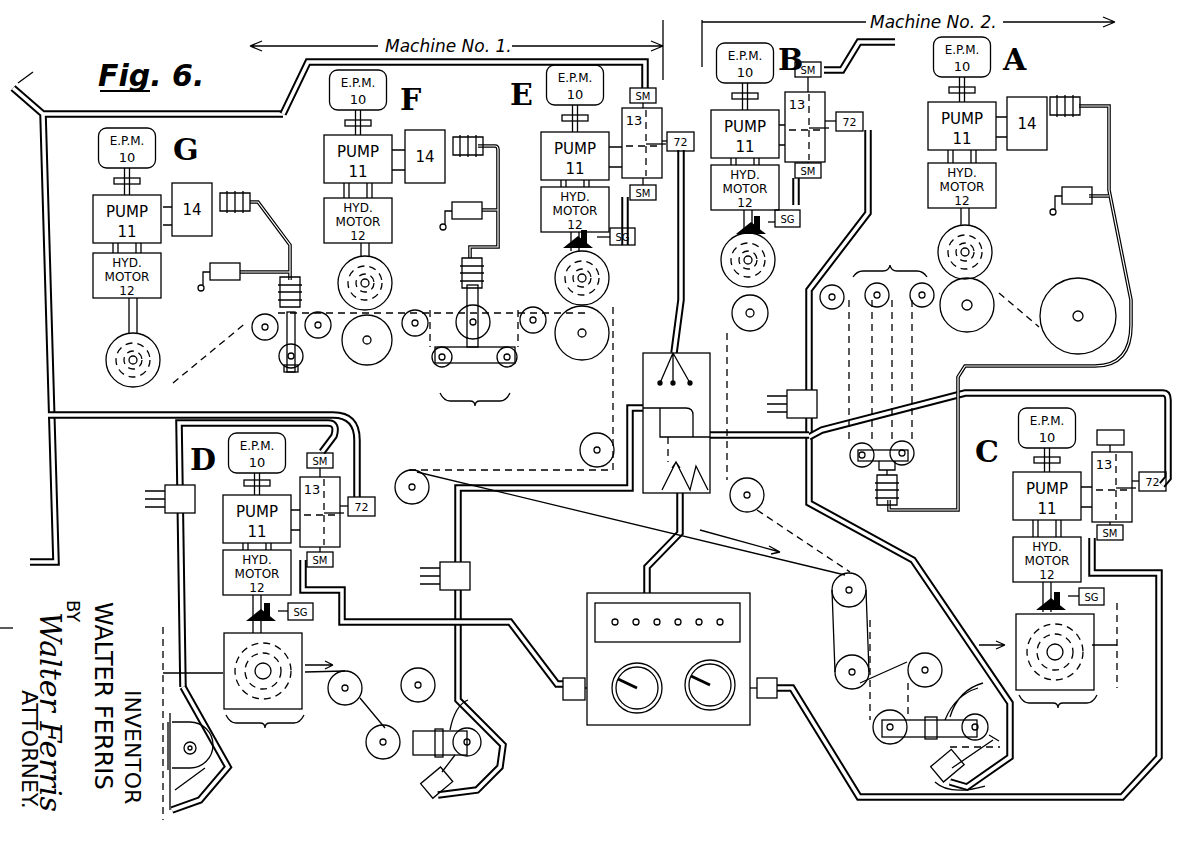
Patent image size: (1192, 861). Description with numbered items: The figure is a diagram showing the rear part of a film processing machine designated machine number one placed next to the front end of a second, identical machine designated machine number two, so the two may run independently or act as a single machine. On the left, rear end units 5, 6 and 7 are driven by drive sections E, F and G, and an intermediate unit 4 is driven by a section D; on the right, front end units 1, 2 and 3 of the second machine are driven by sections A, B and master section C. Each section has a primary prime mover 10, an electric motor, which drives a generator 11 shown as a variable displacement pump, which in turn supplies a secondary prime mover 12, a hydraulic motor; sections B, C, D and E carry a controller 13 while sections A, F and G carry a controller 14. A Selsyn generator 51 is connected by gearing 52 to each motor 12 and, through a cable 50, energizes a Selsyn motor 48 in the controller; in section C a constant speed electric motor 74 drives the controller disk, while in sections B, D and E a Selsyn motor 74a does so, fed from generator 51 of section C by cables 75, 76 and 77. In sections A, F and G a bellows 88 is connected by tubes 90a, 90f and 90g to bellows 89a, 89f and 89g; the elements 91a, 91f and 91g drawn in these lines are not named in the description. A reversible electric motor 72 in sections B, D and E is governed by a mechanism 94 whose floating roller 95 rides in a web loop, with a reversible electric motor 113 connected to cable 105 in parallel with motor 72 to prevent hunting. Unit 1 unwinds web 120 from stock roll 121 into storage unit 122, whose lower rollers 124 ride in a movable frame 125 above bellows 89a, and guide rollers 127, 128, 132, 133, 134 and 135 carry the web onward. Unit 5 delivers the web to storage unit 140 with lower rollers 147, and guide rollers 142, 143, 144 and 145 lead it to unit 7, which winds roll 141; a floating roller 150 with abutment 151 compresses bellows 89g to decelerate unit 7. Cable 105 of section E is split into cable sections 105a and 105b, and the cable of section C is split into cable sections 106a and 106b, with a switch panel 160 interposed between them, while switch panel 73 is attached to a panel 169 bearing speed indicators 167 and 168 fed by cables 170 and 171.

The front end unit 1 is at (988, 259).
The front end unit 2 is at (727, 271).
The front end unit 3 is at (1056, 677).
The intermediate unit 4 is at (264, 699).
The rear end unit 5 is at (602, 279).
The rear end unit 6 is at (385, 277).
The rear end unit 7 is at (87, 357).
The primary prime mover 10 is at (127, 148).
The generator 11 is at (127, 219).
The secondary prime mover 12 is at (541, 204).
The controller 13 is at (644, 143).
The controller 14 is at (192, 209).
The Selsyn motor 48 is at (641, 200).
The cable 50 is at (802, 196).
The Selsyn generator 51 is at (635, 237).
The gearing 52 is at (566, 241).
The reversible electric motor 72 is at (759, 319).
The switch panel 73 is at (675, 677).
The constant speed electric motor 74 is at (1109, 433).
The Selsyn motor 74a is at (318, 454).
The cable 75 is at (40, 130).
The cable 76 is at (181, 411).
The cable 77 is at (290, 85).
The bellows 88 is at (1070, 87).
The bellows 89a is at (900, 487).
The bellows 89f is at (483, 278).
The bellows 89g is at (278, 291).
The tube 90a is at (1114, 152).
The tube 90f is at (499, 155).
The tube 90g is at (276, 217).
The valve 91a is at (1068, 188).
The valve 91f is at (470, 198).
The valve 91g is at (230, 258).
The control mechanism 94 is at (583, 753).
The floating roller 95 is at (878, 729).
The multi-wire cable 105 is at (180, 555).
The cable section 105a is at (676, 340).
The cable section 105b is at (460, 534).
The cable section 106a is at (1136, 398).
The cable section 106b is at (652, 560).
The reversible electric motor 113 is at (944, 768).
The web 120 is at (1025, 336).
The stock roll 121 is at (1078, 316).
The storage unit 122 is at (877, 279).
The lower rollers 124 is at (858, 456).
The vertically movable frame 125 is at (878, 469).
The guide roller 127 is at (838, 601).
The guide roller 128 is at (840, 664).
The guide roller 132 is at (342, 706).
The guide roller 133 is at (430, 665).
The guide roller 134 is at (411, 470).
The guide roller 135 is at (594, 433).
The storage unit 140 is at (474, 354).
The roll 141 is at (159, 346).
The guide roller 142 is at (534, 333).
The guide roller 143 is at (415, 336).
The guide roller 144 is at (318, 338).
The guide roller 145 is at (262, 340).
The lower rollers 147 is at (503, 366).
The floating roller 150 is at (303, 375).
The abutment 151 is at (297, 313).
The switch panel 160 is at (657, 493).
The speed indicator 167 is at (632, 713).
The speed indicator 168 is at (706, 711).
The panel 169 is at (746, 716).
The cable 170 is at (541, 672).
The cable 171 is at (842, 769).